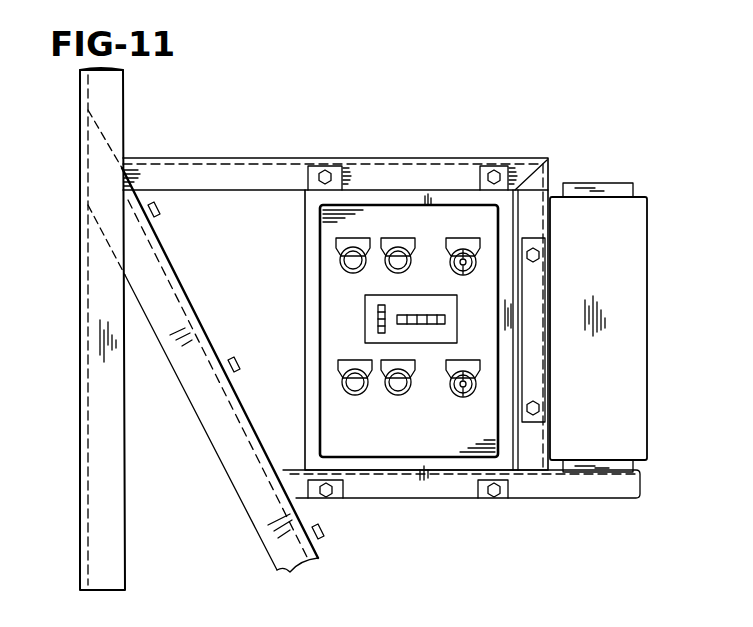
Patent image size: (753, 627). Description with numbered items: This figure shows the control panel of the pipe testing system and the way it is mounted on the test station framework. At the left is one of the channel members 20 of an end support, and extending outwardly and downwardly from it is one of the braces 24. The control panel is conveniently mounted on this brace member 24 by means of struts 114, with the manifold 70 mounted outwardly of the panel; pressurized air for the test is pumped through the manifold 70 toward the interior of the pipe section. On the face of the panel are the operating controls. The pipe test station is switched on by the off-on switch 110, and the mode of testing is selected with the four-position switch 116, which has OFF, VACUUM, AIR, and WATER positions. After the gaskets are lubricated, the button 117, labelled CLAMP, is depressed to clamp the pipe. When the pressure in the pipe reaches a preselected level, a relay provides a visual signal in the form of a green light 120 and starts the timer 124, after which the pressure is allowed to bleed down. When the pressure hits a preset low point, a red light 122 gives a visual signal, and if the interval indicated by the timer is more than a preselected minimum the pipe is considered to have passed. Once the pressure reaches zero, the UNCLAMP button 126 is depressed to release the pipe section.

The channel member 20 is at (80, 415).
The brace 24 is at (213, 443).
The strut 114 is at (264, 157).
The manifold 70 is at (647, 222).
The green light 120 is at (338, 252).
The red light 122 is at (398, 242).
The four-position switch 116 is at (461, 250).
The timer 124 is at (364, 316).
The CLAMP button 117 is at (348, 378).
The UNCLAMP button 126 is at (398, 396).
The off-on switch 110 is at (464, 398).